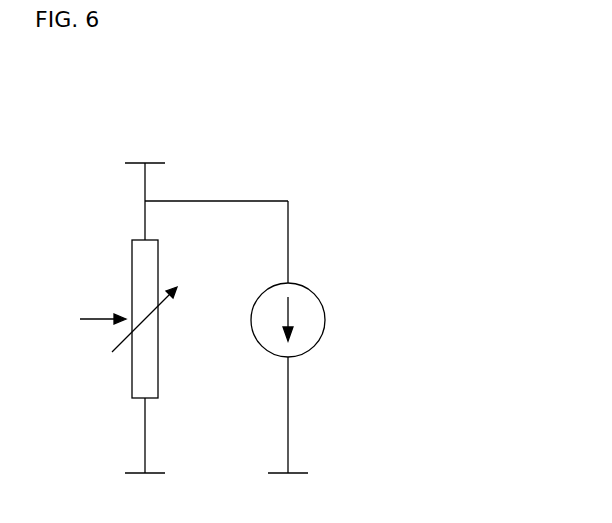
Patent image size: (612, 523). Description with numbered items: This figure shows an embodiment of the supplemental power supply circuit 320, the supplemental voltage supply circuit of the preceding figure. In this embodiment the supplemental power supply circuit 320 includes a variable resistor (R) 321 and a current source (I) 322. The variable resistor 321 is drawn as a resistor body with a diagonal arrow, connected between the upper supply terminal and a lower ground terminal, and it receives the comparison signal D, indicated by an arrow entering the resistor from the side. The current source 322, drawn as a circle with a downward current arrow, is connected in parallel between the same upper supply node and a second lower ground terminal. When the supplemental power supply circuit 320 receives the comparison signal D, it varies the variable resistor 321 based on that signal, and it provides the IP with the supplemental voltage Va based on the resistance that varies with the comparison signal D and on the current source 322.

The supplemental power supply circuit 320 is at (246, 83).
The variable resistor 321 is at (132, 240).
The current source 322 is at (313, 290).